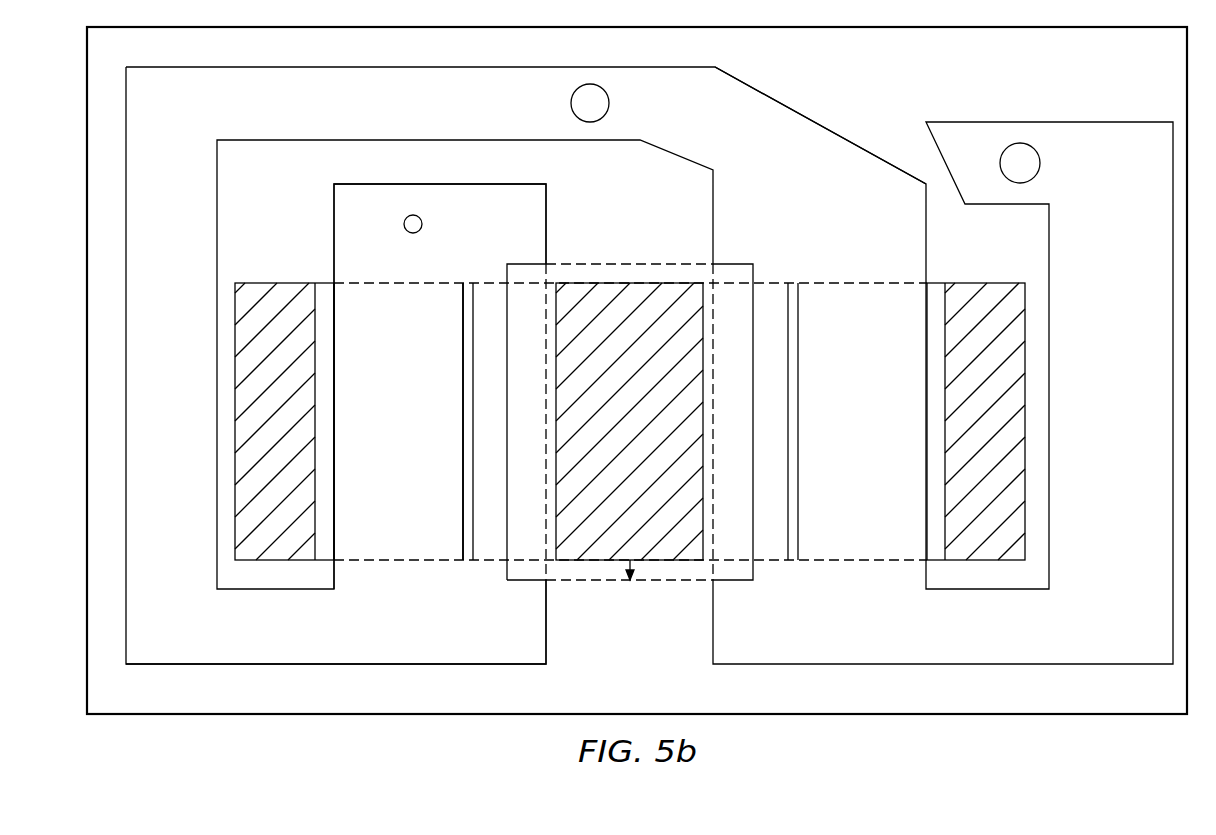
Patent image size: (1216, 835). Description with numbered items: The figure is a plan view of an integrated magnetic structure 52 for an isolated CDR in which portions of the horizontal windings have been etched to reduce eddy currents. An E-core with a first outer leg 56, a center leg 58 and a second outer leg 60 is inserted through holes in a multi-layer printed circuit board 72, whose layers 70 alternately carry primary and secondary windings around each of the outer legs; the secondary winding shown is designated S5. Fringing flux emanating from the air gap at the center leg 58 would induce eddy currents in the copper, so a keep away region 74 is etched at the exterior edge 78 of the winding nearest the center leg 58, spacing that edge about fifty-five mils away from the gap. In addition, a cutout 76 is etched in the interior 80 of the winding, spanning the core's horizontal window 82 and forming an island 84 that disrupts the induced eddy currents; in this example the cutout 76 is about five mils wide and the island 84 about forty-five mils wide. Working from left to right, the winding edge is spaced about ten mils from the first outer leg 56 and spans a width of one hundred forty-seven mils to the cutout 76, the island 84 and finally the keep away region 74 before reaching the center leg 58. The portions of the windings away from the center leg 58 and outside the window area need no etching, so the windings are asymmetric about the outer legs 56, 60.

The integrated magnetic structure 52 is at (837, 115).
The secondary winding S5 is at (765, 108).
The first outer leg 56 is at (263, 434).
The center leg 58 is at (618, 434).
The second outer leg 60 is at (973, 434).
The layers 70 is at (208, 699).
The multi-layer printed circuit board 72 is at (379, 705).
The keep away region 74 is at (531, 283).
The cutout 76 is at (462, 340).
The exterior edge 78 is at (547, 658).
The interior 80 is at (386, 434).
The horizontal window 82 is at (388, 283).
The island 84 is at (477, 434).